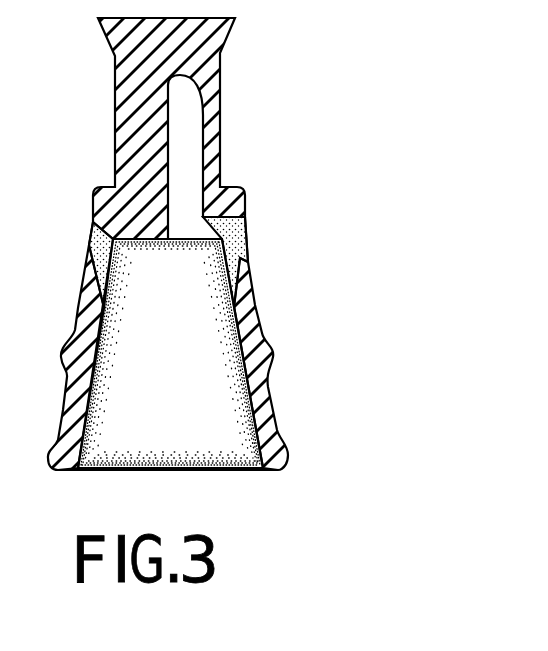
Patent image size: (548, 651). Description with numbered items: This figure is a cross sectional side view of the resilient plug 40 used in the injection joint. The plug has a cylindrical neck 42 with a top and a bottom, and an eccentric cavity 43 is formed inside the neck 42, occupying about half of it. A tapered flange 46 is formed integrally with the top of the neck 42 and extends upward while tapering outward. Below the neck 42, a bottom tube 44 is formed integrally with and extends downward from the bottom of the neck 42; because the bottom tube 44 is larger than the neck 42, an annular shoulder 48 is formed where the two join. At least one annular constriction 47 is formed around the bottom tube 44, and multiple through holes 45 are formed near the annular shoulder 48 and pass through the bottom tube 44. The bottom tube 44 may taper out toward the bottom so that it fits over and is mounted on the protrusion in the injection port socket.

The resilient plug 40 is at (267, 244).
The neck 42 is at (216, 128).
The eccentric cavity 43 is at (204, 144).
The bottom tube 44 is at (205, 343).
The through holes 45 is at (246, 258).
The tapered flange 46 is at (230, 32).
The annular constriction 47 is at (257, 325).
The annular shoulder 48 is at (222, 186).